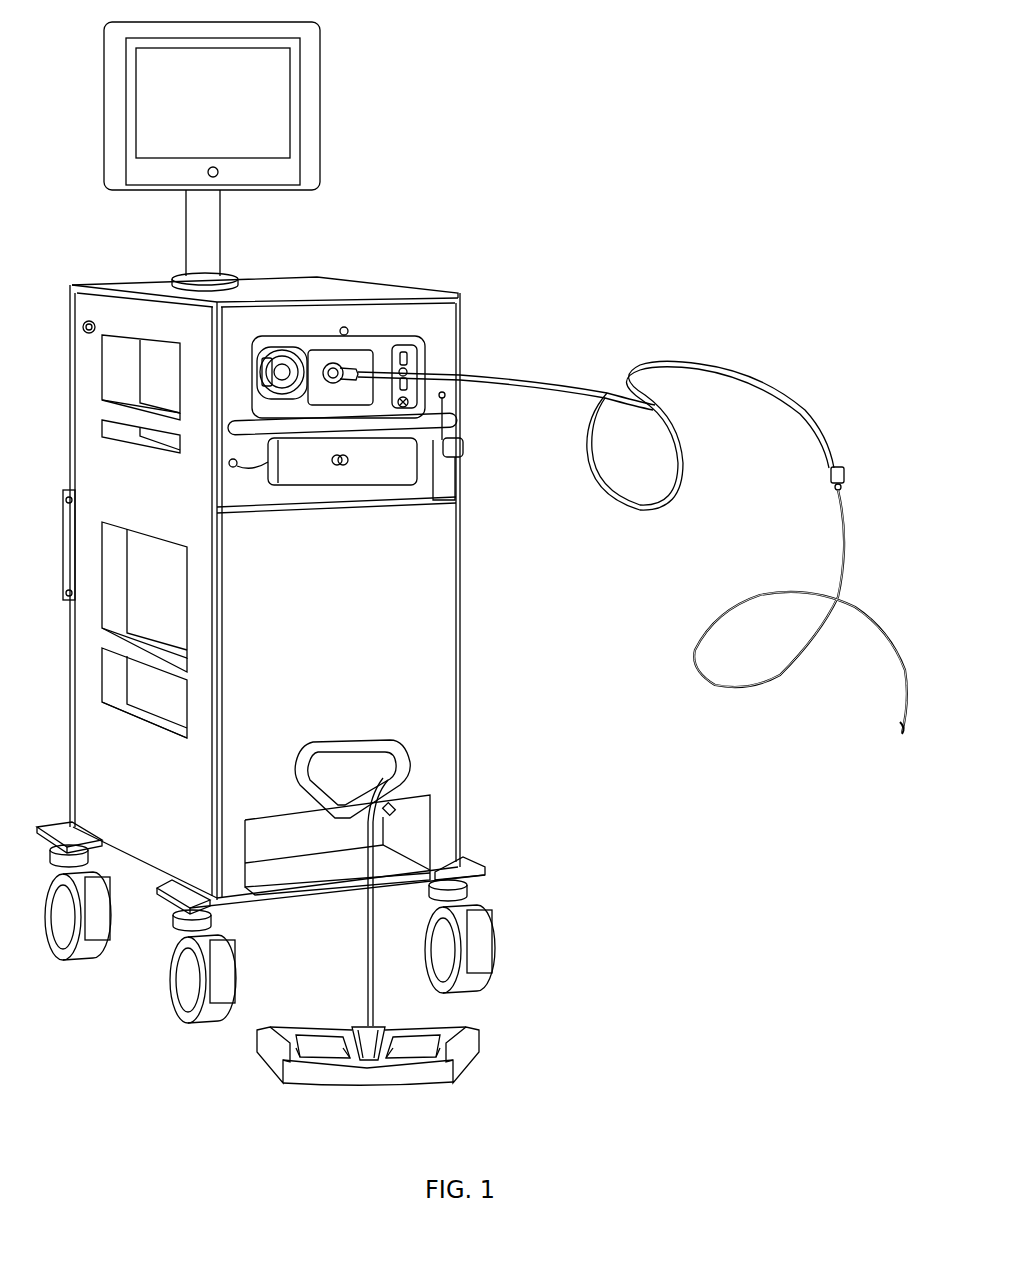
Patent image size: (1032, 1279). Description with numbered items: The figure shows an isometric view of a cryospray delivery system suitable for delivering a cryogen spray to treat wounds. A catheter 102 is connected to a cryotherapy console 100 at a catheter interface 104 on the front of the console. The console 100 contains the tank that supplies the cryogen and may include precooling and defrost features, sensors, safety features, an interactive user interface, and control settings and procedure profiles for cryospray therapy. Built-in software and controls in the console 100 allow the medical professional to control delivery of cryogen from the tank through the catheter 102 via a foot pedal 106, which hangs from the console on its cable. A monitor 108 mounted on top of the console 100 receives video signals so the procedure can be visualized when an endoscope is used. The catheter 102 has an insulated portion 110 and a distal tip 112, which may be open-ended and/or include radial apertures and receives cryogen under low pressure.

The cryotherapy console 100 is at (97, 287).
The catheter 102 is at (847, 547).
The catheter interface 104 is at (340, 366).
The foot pedal 106 is at (332, 1082).
The monitor 108 is at (104, 115).
The insulated portion 110 is at (547, 385).
The distal tip 112 is at (898, 736).